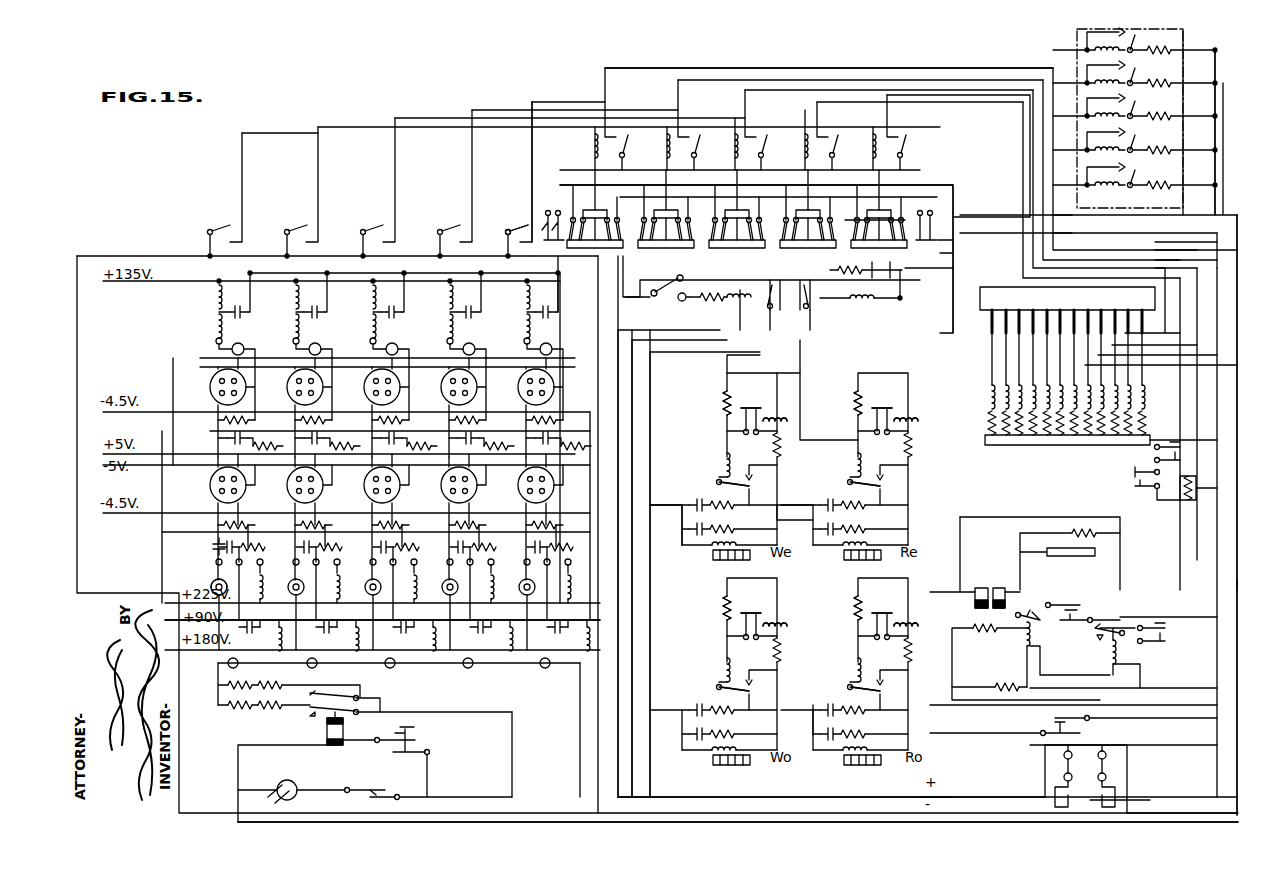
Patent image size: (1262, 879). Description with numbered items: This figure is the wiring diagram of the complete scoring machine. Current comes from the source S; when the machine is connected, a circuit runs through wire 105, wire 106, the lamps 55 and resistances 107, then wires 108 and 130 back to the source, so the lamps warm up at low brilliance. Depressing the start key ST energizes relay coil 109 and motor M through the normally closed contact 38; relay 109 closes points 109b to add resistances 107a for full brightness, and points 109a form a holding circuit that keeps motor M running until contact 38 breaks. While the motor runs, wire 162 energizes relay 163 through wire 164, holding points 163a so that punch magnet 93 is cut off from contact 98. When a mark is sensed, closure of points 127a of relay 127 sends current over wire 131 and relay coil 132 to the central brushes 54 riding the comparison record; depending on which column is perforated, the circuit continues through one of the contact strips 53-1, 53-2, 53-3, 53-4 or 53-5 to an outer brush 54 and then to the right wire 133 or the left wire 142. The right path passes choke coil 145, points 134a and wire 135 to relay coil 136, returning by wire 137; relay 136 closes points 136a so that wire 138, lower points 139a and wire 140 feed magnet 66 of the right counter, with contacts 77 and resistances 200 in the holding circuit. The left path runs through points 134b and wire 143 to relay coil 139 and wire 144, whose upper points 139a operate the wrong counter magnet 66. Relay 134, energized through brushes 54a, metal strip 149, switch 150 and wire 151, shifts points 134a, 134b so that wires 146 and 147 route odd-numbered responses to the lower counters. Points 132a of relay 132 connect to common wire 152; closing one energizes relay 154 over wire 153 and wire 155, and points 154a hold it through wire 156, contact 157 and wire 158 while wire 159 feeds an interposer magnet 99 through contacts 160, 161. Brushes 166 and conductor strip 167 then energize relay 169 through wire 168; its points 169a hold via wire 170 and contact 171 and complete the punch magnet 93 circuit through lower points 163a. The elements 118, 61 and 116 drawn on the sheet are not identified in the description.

The wire 130 is at (150, 246).
The wire 131 is at (532, 153).
The relay points 127a is at (516, 222).
The metal strip 149 is at (553, 262).
The relay coil 127 is at (534, 322).
The capacitor 118 is at (202, 542).
The jack 61 is at (212, 578).
The conductor 116 is at (248, 611).
The lamps 55 is at (545, 668).
The resistances 107 is at (245, 680).
The resistances 107a is at (240, 706).
The relay points 109b is at (310, 693).
The relay points 109a is at (310, 716).
The relay coil 109 is at (340, 725).
The start key ST is at (408, 742).
The motor M is at (293, 779).
The normally closed contact 38 is at (377, 789).
The wire 108 is at (512, 727).
The wire 106 is at (580, 727).
The wire 138 is at (650, 665).
The wire 162 is at (597, 797).
The contact strip 53-5 is at (595, 218).
The contact strip 53-4 is at (666, 218).
The contact strip 53-3 is at (737, 218).
The contact strip 53-2 is at (808, 218).
The contact strip 53-1 is at (878, 245).
The brushes 54a is at (552, 208).
The brushes 54 is at (880, 217).
The brushes 166 is at (930, 212).
The wire 152 is at (953, 182).
The conductor strip 167 is at (952, 236).
The right wire 133 is at (952, 251).
The wire 142 is at (960, 265).
The relay coil 132 is at (870, 139).
The relay points 132a is at (901, 142).
The wire 153 is at (990, 73).
The relay points 134b is at (740, 281).
The relay points 134a is at (862, 273).
The choke coil 145 is at (872, 299).
The switch 150 is at (674, 298).
The relay 134 is at (762, 322).
The relay coil 154 is at (1083, 47).
The relay points 154a is at (1202, 119).
The wire 155 is at (1213, 87).
The wire 159 is at (1066, 230).
The wire 158 is at (1215, 225).
The interposer magnet 99 is at (1143, 395).
The wire 168 is at (1217, 409).
The normally closed contacts 160 is at (1190, 445).
The normally closed contacts 161 is at (1133, 471).
The punch magnet 93 is at (982, 585).
The contact 98 is at (1082, 605).
The relay points 163a is at (1040, 623).
The relay 163 is at (1038, 643).
The wire 164 is at (953, 657).
The relay 169 is at (1125, 653).
The relay points 169a is at (1075, 602).
The wire 170 is at (1187, 612).
The contact 171 is at (1170, 625).
The wire 156 is at (958, 717).
The normally closed contact 157 is at (1055, 727).
The wire 105 is at (1047, 770).
The source of current supply S is at (1128, 797).
The relay coil 139 is at (723, 454).
The relay coil 136 is at (860, 452).
The wire 143 is at (743, 361).
The wire 146 is at (810, 340).
The wire 135 is at (826, 373).
The wire 147 is at (618, 380).
The wire 151 is at (632, 405).
The wire 144 is at (682, 512).
The wire 137 is at (823, 520).
The wire 140 is at (782, 499).
The relay points 139a is at (755, 466).
The relay points 136a is at (900, 478).
The contacts 77 is at (828, 493).
The counter magnet 66 is at (793, 398).
The resistances 200 is at (725, 411).